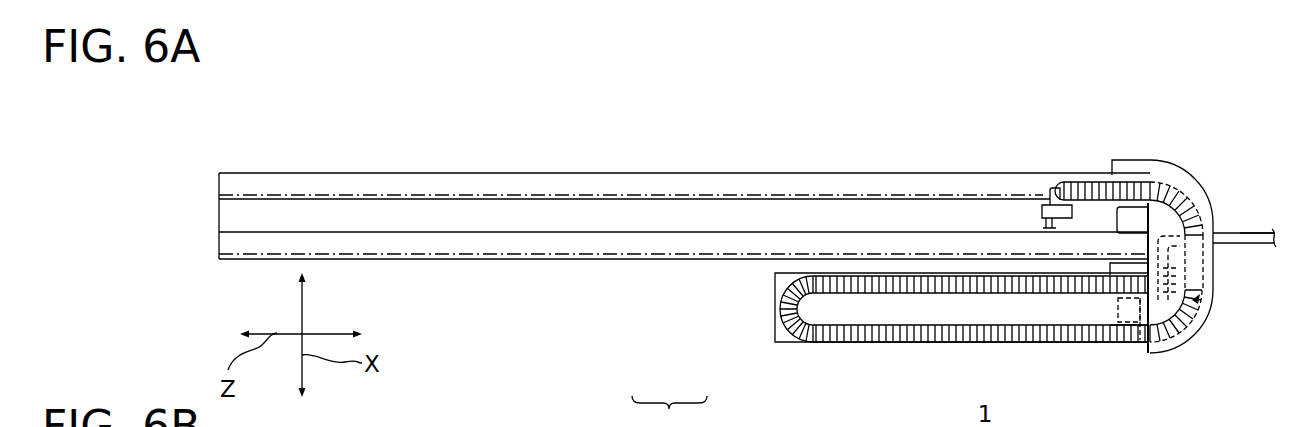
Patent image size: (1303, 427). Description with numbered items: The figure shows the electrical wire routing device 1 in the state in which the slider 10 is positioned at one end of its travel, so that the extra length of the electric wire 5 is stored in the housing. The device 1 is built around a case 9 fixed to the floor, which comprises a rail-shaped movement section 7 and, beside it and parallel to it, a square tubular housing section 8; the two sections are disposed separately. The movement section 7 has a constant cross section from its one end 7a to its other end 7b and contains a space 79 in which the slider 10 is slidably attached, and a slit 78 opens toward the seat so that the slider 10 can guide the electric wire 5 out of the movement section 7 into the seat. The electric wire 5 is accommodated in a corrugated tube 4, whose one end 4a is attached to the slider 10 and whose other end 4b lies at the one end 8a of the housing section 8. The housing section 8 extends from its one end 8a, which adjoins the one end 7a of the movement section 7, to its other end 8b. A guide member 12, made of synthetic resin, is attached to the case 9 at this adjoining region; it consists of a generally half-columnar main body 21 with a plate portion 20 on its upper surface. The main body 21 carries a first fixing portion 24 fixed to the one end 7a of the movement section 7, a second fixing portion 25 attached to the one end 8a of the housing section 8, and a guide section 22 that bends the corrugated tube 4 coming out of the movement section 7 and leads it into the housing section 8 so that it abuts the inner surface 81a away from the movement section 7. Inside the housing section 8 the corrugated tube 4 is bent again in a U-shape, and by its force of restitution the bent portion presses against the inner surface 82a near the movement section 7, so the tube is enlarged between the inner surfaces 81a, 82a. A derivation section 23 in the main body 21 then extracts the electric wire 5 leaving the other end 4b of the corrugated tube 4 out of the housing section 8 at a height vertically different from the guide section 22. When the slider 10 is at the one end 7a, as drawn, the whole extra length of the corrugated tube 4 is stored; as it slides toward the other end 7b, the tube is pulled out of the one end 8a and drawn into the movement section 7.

The electrical wire routing device 1 is at (1014, 150).
The corrugated tube 4 is at (1215, 295).
The one end of the corrugated tube 4a is at (1060, 180).
The other end of the corrugated tube 4b is at (1140, 338).
The electric wire 5 is at (1248, 246).
The movement section 7 is at (698, 264).
The one end of the movement section 7a is at (1156, 187).
The other end of the movement section 7b is at (239, 188).
The housing section 8 is at (772, 306).
The one end of the housing section 8a is at (1130, 332).
The other end of the housing section 8b is at (792, 333).
The case 9 is at (669, 411).
The slider 10 is at (1060, 208).
The guide member 12 is at (1212, 203).
The plate portion 20 is at (1206, 190).
The main body 21 is at (1196, 175).
The guide section 22 is at (1203, 313).
The derivation section 23 is at (1178, 348).
The first fixing portion 24 is at (1130, 213).
The second fixing portion 25 is at (1122, 302).
The slit 78 is at (797, 201).
The space 79 is at (858, 192).
The inner surface of the housing section away from the movement section 81a is at (951, 336).
The inner surface of the housing section near the movement section 82a is at (921, 280).